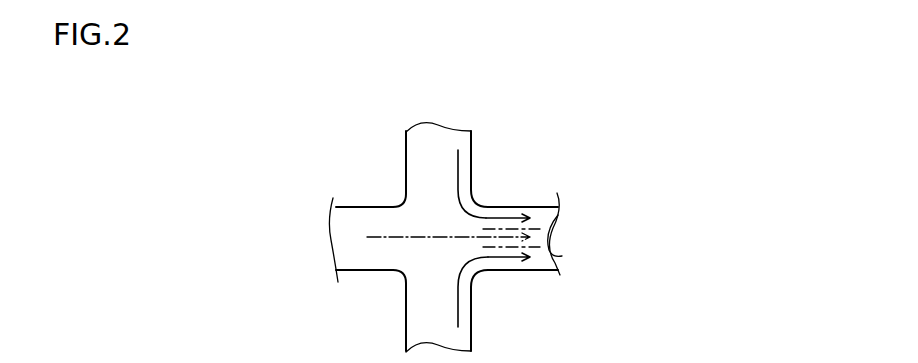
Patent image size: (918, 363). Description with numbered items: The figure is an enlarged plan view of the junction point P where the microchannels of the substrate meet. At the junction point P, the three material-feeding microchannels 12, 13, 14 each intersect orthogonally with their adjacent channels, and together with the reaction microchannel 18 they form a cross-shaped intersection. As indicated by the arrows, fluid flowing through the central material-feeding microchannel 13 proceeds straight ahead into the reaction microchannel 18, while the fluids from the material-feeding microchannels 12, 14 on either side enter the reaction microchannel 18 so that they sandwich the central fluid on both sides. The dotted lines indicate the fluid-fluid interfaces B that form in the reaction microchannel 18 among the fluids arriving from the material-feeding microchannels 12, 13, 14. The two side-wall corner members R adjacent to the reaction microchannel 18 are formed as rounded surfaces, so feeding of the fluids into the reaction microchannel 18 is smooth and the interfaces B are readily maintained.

The material-feeding microchannel 12 is at (406, 158).
The central material-feeding microchannel 13 is at (362, 206).
The material-feeding microchannel 14 is at (406, 320).
The reaction microchannel 18 is at (530, 207).
The junction point P is at (492, 191).
The interface B is at (562, 255).
The corner member R is at (477, 270).